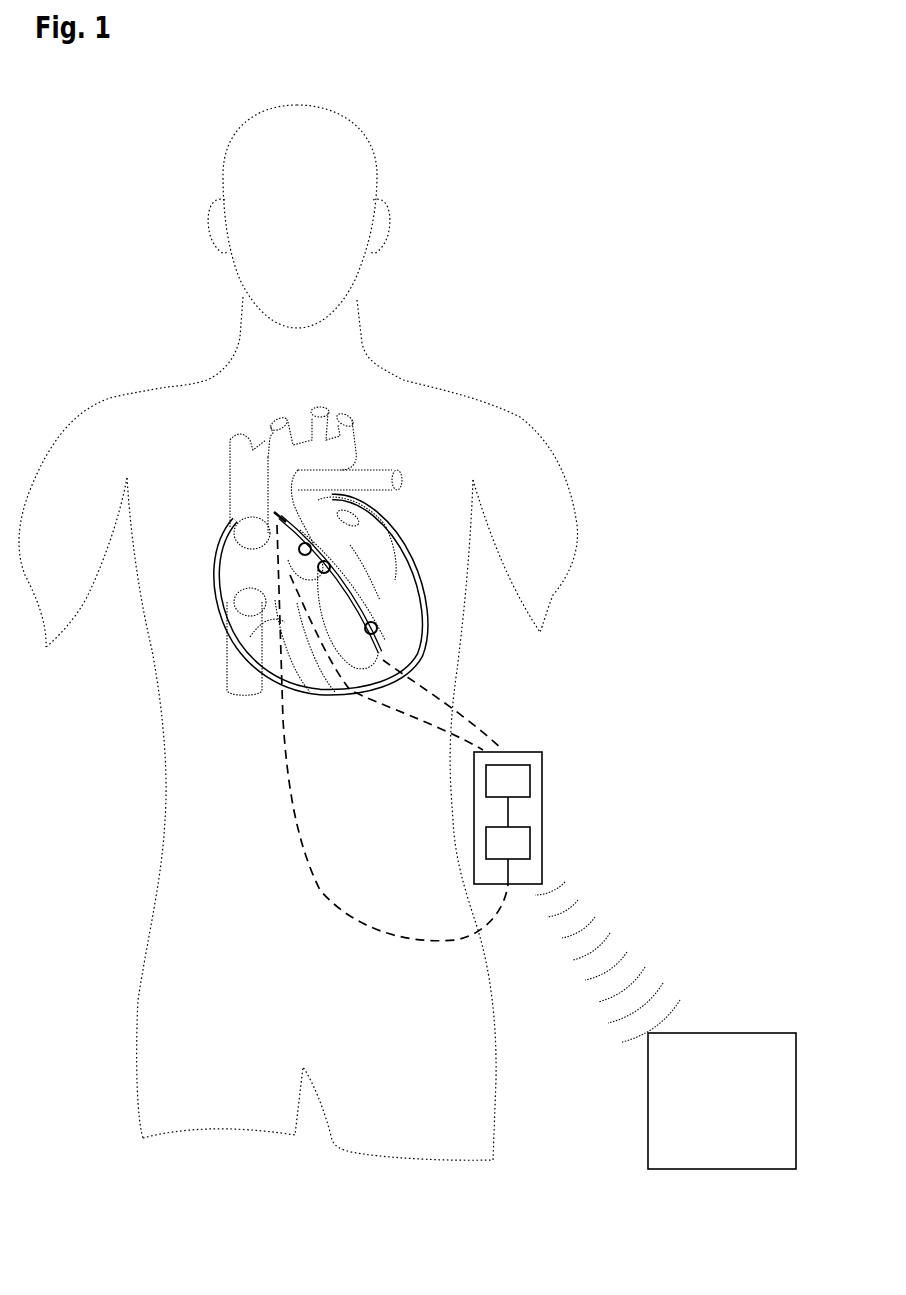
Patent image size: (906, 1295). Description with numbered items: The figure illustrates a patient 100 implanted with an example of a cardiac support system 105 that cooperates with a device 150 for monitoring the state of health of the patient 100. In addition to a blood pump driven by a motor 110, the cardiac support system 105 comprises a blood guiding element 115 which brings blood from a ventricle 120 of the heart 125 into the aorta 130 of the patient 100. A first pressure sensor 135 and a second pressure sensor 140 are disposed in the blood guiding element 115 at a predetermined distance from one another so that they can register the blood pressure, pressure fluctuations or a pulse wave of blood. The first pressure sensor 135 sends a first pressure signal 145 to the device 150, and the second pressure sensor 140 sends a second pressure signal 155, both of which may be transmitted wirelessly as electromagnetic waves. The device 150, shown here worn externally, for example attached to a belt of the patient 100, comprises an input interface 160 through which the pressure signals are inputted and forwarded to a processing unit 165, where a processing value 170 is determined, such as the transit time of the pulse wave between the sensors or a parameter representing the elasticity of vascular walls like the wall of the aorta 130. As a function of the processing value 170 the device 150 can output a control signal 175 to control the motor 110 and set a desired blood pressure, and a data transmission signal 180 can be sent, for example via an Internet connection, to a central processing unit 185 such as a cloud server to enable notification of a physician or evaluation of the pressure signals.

The patient 100 is at (377, 178).
The cardiac support system 105 is at (392, 611).
The motor 110 is at (330, 540).
The blood guiding element 115 is at (380, 578).
The ventricle 120 is at (383, 610).
The heart 125 is at (220, 600).
The aorta 130 is at (335, 458).
The first pressure sensor 135 is at (380, 637).
The second pressure sensor 140 is at (320, 531).
The first pressure signal 145 is at (415, 702).
The device for monitoring a state of health 150 is at (542, 810).
The second pressure signal 155 is at (497, 720).
The input interface 160 is at (542, 778).
The processing unit 165 is at (542, 843).
The processing value 170 is at (510, 873).
The control signal 175 is at (290, 759).
The data transmission signal 180 is at (622, 958).
The central processing unit 185 is at (758, 1033).